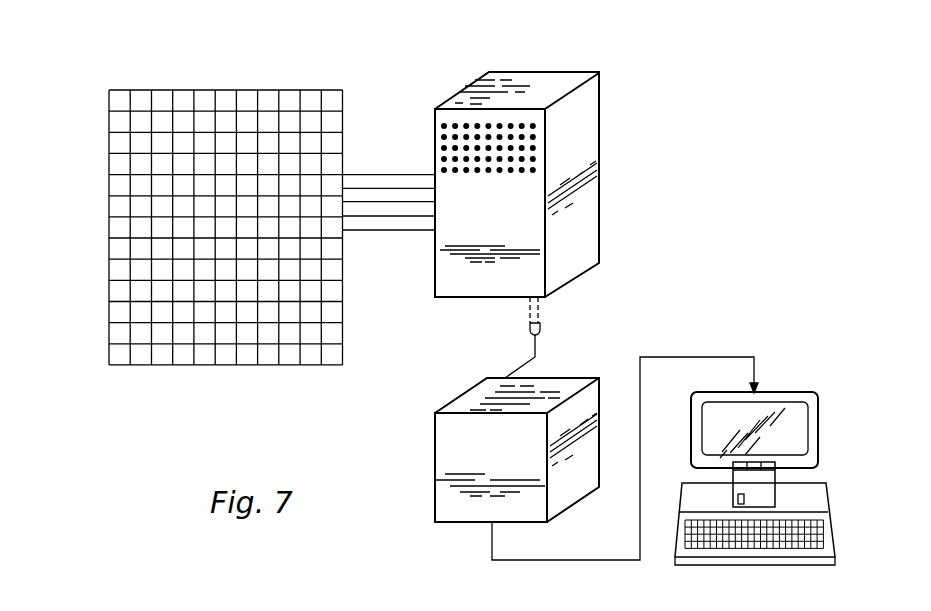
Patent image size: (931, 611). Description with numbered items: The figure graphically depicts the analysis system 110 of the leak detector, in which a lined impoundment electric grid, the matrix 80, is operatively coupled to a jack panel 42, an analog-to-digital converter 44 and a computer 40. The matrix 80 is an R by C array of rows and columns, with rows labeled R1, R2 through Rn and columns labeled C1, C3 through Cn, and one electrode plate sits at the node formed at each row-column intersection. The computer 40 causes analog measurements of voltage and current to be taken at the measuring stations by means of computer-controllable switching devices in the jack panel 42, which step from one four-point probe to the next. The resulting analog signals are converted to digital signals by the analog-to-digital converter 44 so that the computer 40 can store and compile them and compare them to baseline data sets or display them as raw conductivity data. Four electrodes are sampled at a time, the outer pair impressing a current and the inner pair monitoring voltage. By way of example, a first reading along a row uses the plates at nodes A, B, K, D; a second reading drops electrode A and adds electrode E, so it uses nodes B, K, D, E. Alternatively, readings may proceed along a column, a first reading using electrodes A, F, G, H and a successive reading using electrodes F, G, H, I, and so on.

The matrix 80 is at (99, 425).
The jack panel 42 is at (585, 183).
The analog-to-digital converter 44 is at (450, 444).
The computer 40 is at (786, 390).
The analysis system 110 is at (692, 313).
The node A is at (152, 109).
The node B is at (173, 109).
The node K is at (196, 109).
The node D is at (236, 109).
The node E is at (250, 109).
The node F is at (130, 131).
The node G is at (130, 151).
The node H is at (147, 155).
The node I is at (147, 155).
The row R1 is at (343, 111).
The row R2 is at (343, 131).
The row Rn is at (343, 343).
The column C1 is at (130, 365).
The column C3 is at (173, 365).
The column Cn is at (321, 365).